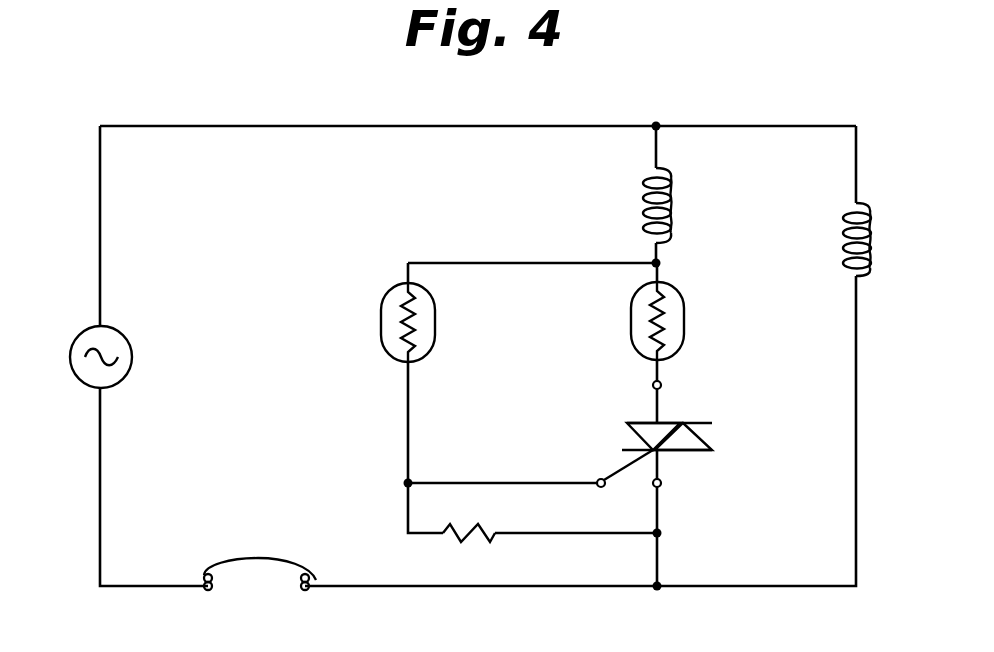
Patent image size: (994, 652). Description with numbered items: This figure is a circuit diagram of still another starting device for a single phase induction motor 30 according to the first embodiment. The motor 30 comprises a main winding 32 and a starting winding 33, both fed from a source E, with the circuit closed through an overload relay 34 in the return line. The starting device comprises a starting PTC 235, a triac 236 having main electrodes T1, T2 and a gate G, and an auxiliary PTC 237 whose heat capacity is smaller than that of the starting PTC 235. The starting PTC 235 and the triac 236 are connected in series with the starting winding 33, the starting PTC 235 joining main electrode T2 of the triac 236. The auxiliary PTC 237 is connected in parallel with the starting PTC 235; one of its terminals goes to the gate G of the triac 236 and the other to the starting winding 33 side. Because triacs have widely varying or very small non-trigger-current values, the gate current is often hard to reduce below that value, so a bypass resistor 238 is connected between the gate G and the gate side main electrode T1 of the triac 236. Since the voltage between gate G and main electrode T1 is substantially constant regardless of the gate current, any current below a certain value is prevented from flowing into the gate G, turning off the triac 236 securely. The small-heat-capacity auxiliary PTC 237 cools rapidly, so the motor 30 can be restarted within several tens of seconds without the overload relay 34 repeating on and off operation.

The single phase induction motor 30 is at (751, 135).
The main winding 32 is at (845, 220).
The starting winding 33 is at (673, 206).
The overload relay 34 is at (236, 562).
The starting PTC 235 is at (686, 318).
The triac 236 is at (710, 421).
The auxiliary PTC 237 is at (382, 318).
The bypass resistor 238 is at (470, 538).
The source E is at (82, 333).
The gate side main electrode T1 is at (662, 483).
The main electrode T2 is at (652, 385).
The gate G is at (598, 479).